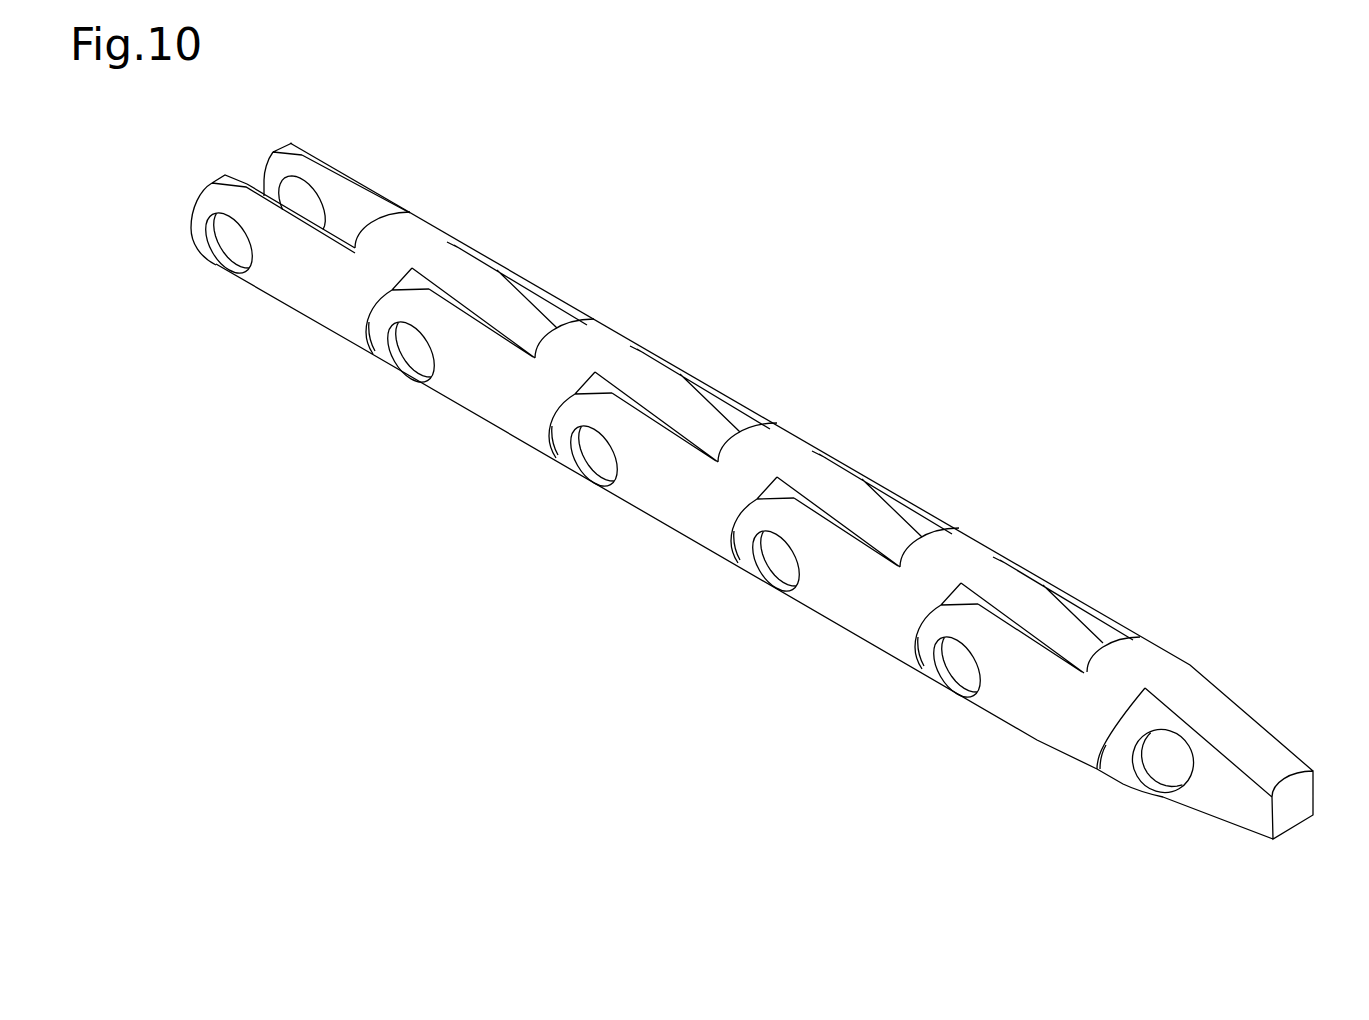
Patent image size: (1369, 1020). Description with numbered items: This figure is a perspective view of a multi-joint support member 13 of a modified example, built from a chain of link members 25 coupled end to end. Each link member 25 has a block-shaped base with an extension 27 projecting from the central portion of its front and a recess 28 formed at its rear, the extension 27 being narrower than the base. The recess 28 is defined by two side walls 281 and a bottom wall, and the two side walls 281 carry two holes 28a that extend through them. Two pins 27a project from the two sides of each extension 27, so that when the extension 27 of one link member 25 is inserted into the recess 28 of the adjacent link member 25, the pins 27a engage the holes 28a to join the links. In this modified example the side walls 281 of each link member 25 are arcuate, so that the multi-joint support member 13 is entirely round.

The multi-joint support member 13 is at (1054, 479).
The link member 25 is at (478, 390).
The extension 27 is at (1060, 625).
The pin 27a is at (982, 673).
The recess 28 is at (372, 215).
The side wall 281 is at (498, 268).
The hole 28a is at (222, 262).